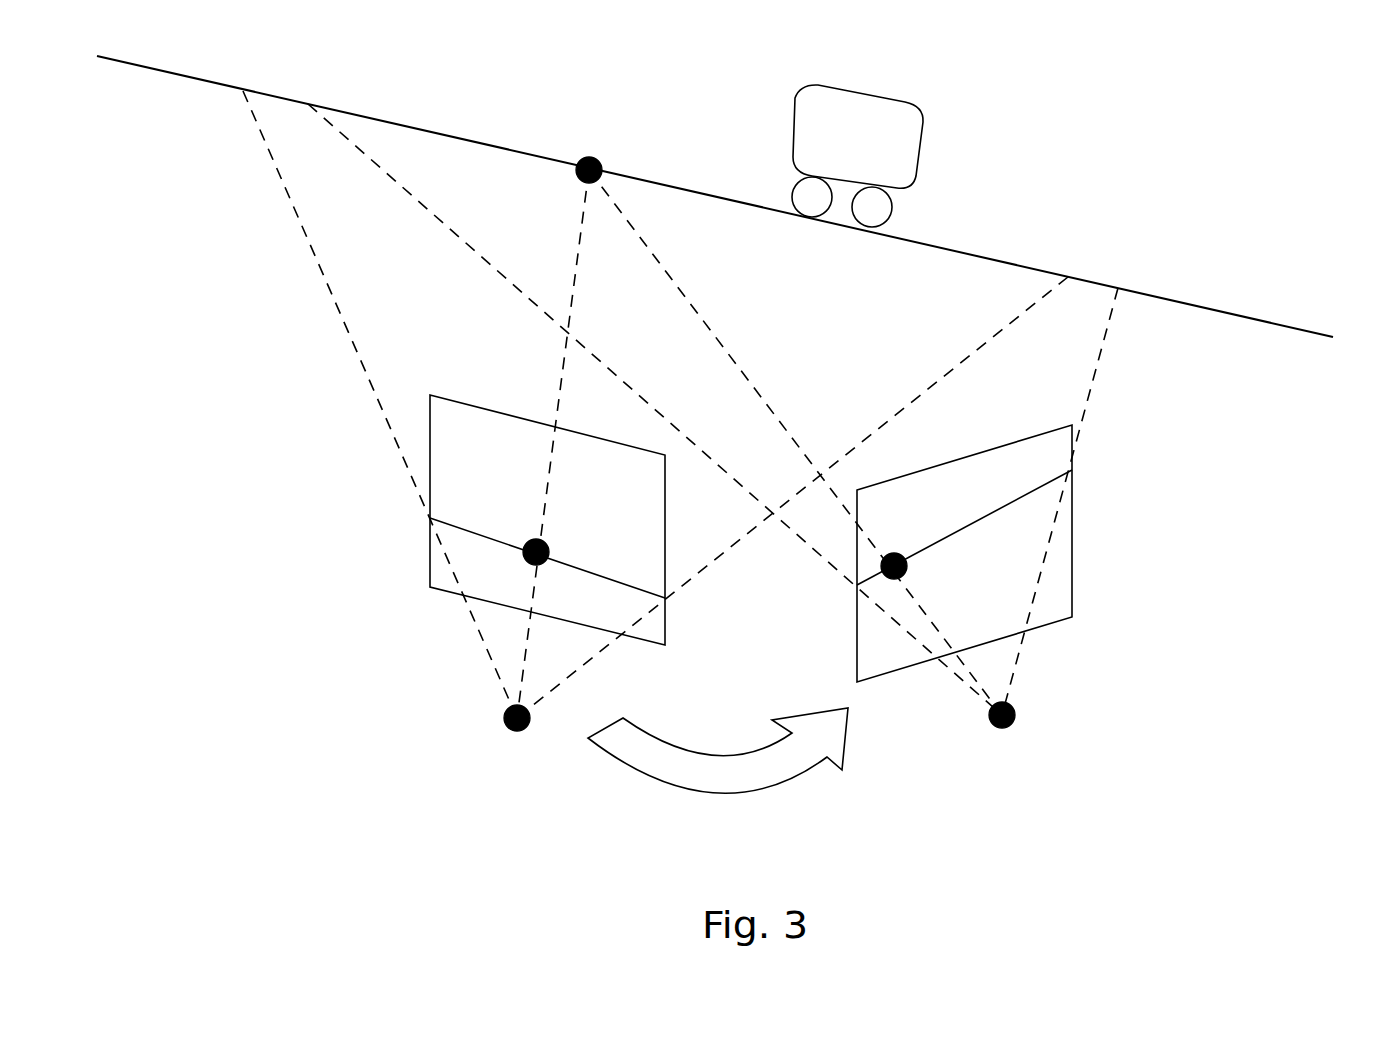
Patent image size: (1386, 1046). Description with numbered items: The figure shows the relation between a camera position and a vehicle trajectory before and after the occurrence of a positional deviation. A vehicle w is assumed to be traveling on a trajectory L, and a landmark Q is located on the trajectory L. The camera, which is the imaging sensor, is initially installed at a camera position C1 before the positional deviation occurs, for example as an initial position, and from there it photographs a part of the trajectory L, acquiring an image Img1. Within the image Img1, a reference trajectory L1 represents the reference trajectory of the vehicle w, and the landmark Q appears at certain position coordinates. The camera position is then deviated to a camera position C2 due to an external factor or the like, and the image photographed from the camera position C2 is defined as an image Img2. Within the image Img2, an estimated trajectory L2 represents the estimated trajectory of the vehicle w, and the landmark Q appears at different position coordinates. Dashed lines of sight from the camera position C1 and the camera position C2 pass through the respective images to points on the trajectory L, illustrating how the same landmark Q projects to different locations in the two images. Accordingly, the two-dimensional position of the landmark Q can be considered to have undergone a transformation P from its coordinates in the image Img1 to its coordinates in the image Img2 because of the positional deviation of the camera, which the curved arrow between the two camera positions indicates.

The trajectory L is at (734, 208).
The landmark Q is at (590, 157).
The vehicle W is at (931, 129).
The image Img1 is at (430, 566).
The reference trajectory L1 is at (478, 533).
The image Img2 is at (1073, 584).
The estimated trajectory L2 is at (980, 520).
The camera position C1 is at (505, 725).
The camera position C2 is at (1014, 724).
The transformation P is at (707, 792).